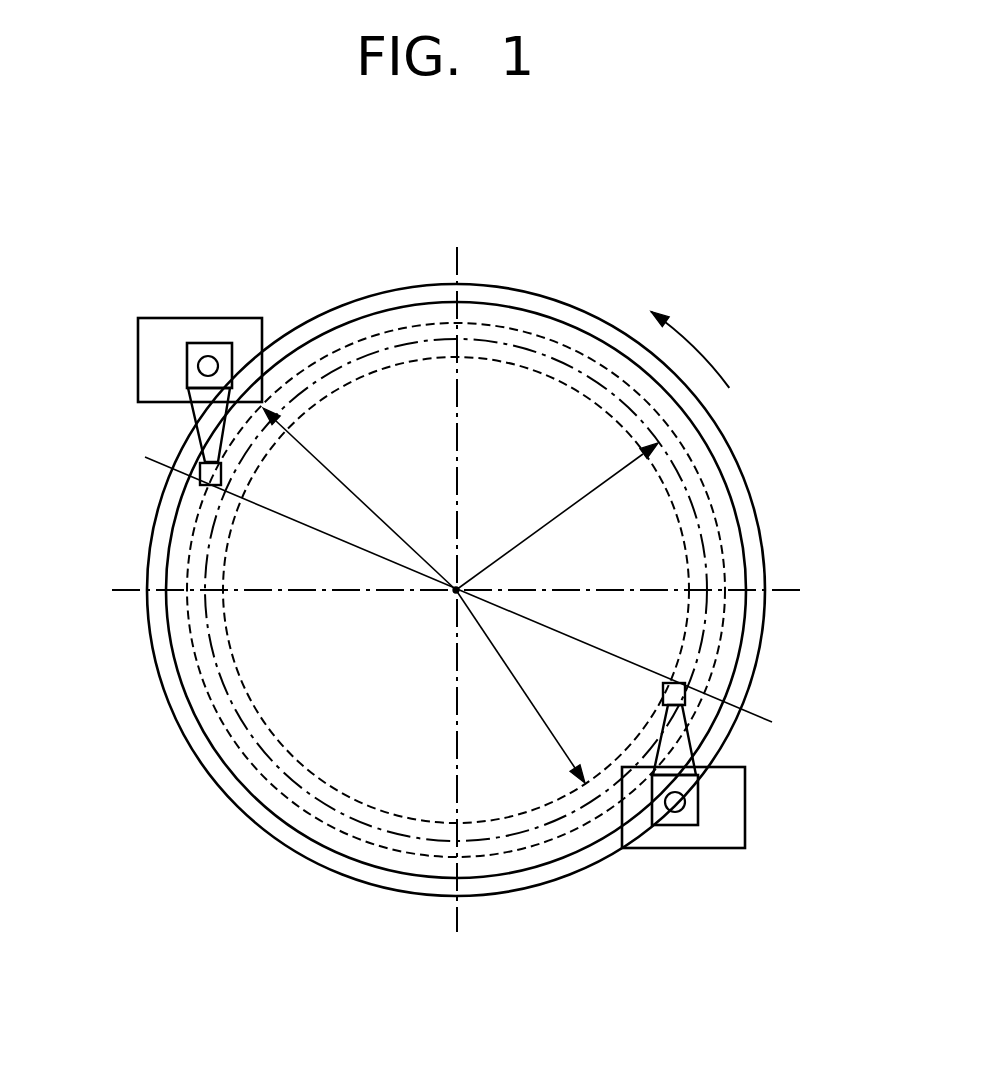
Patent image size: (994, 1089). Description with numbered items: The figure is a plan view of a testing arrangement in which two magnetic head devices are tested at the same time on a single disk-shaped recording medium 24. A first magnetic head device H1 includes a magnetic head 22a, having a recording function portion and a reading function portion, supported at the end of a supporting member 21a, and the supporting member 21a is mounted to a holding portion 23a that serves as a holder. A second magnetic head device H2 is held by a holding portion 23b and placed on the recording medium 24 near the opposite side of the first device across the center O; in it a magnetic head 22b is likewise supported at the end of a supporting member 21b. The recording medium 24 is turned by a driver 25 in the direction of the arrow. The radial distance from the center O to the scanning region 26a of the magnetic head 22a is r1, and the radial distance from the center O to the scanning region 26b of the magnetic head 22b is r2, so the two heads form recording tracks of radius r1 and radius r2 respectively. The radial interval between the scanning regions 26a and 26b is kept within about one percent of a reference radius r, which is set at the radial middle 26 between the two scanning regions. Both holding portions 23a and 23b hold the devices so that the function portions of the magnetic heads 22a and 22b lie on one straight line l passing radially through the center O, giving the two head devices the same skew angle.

The supporting member 21a is at (687, 773).
The supporting member 21b is at (197, 393).
The magnetic head 22a is at (663, 693).
The magnetic head 22b is at (200, 482).
The holding portion 23a is at (717, 822).
The holding portion 23b is at (180, 328).
The disk-shaped recording medium 24 is at (595, 348).
The driver 25 is at (765, 620).
The radial middle 26 is at (510, 347).
The scanning region 26a is at (540, 373).
The scanning region 26b is at (400, 323).
The magnetic head device H1 is at (693, 738).
The magnetic head device H2 is at (187, 413).
The center O is at (455, 595).
The reference radius r is at (557, 516).
The radial distance r1 is at (520, 686).
The radial distance r2 is at (359, 499).
The straight line l is at (300, 524).